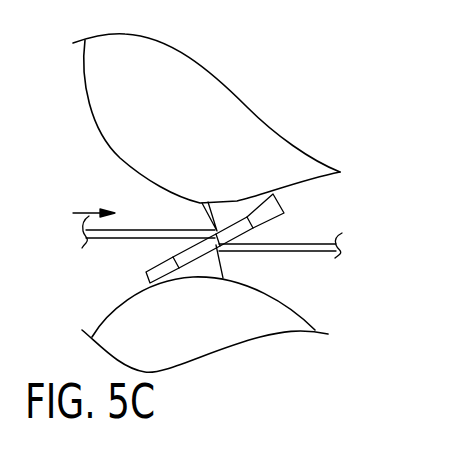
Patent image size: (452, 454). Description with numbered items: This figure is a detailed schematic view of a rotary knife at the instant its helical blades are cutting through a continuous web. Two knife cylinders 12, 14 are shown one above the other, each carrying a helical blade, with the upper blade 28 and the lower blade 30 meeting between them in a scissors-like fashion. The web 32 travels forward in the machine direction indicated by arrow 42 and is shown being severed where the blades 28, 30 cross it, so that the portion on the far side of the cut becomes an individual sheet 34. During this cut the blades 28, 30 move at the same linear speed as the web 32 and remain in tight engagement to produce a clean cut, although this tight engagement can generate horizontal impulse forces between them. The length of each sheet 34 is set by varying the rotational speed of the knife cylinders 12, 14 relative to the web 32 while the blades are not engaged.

The knife cylinder 12 is at (196, 84).
The knife cylinder 14 is at (206, 342).
The helical blade 28 is at (270, 206).
The helical blade 30 is at (143, 273).
The web 32 is at (102, 239).
The individual sheet 34 is at (318, 252).
The arrow 42 is at (92, 212).